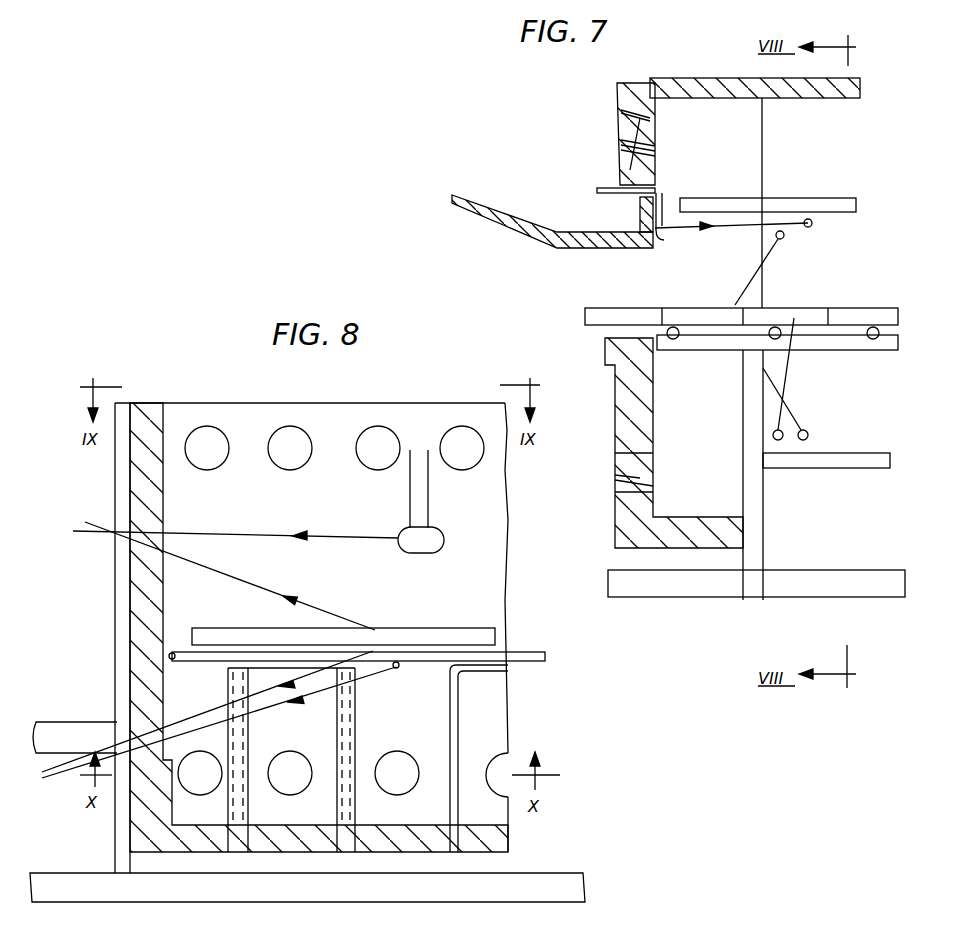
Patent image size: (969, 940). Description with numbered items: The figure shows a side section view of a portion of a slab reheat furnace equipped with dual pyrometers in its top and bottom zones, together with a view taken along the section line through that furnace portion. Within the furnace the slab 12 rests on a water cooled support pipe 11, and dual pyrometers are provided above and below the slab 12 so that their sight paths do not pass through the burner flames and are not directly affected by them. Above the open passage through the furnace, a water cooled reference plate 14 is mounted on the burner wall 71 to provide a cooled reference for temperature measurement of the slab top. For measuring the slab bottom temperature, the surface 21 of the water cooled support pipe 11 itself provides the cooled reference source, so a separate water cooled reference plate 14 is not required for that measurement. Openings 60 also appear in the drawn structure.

In FIG. 8, the water cooled support pipe 11 is at (407, 669).
In FIG. 7, the slab 12 is at (735, 308).
In FIG. 8, the slab 12 is at (455, 636).
In FIG. 7, the reference plate 14 is at (656, 238).
In FIG. 8, the reference plate 14 is at (432, 543).
In FIG. 8, the surface 21 is at (393, 670).
In FIG. 8, the apertures 60 is at (285, 428).
In FIG. 7, the burner wall 71 is at (648, 162).